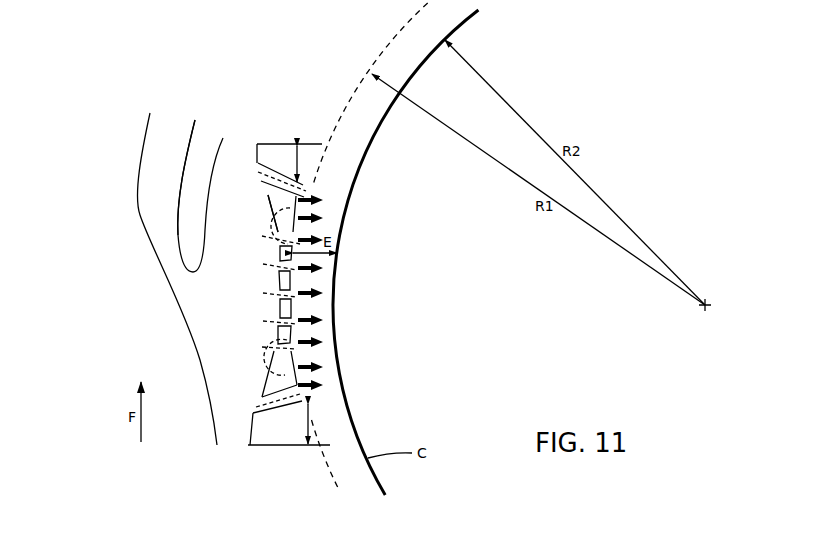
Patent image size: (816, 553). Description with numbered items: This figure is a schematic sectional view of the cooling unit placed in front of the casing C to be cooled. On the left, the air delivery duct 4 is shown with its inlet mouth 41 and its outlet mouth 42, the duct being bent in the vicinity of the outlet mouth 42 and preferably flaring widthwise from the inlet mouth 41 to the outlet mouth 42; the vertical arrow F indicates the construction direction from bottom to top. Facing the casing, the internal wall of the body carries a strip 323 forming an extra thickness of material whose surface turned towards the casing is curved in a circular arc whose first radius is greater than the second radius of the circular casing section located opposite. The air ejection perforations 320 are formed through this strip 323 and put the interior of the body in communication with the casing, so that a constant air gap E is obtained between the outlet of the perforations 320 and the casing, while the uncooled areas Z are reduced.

The air delivery duct 4 is at (143, 243).
The inlet mouth 41 is at (170, 125).
The outlet mouth 42 is at (197, 295).
The air ejection perforations 320 is at (265, 186).
The strip 323 is at (277, 207).